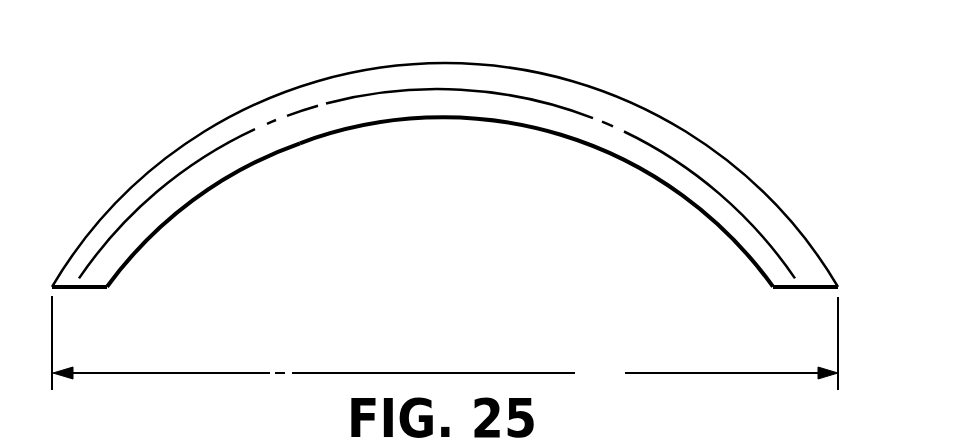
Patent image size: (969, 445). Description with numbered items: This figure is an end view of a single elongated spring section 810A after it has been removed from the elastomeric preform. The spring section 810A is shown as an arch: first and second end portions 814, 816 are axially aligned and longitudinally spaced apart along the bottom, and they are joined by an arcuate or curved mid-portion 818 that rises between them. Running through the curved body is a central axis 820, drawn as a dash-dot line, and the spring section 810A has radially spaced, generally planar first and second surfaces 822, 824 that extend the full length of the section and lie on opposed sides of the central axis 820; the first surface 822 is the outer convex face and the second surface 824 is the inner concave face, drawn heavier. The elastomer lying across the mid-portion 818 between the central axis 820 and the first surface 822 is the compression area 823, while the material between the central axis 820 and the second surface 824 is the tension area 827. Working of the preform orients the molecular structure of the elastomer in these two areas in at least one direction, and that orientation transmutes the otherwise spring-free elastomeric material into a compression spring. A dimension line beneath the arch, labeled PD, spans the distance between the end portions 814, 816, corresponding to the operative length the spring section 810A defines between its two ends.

The spring section 810A is at (147, 160).
The first surface 822 is at (573, 82).
The compression area 823 is at (368, 85).
The central axis 820 is at (253, 132).
The mid-portion 818 is at (483, 105).
The second surface 824 is at (340, 127).
The tension area 827 is at (207, 175).
The first end portion 814 is at (106, 283).
The second end portion 816 is at (814, 283).
The pitch diameter dimension PD is at (445, 344).